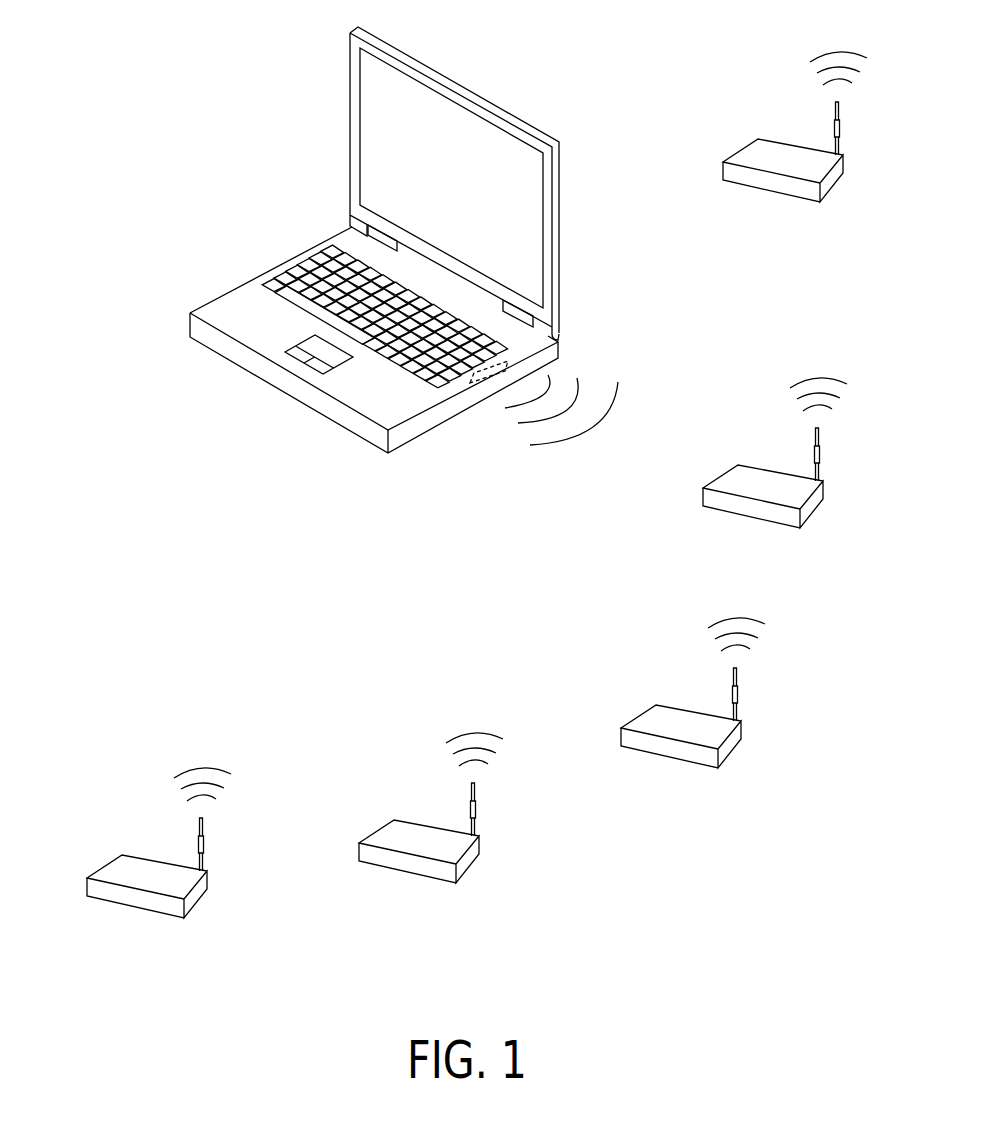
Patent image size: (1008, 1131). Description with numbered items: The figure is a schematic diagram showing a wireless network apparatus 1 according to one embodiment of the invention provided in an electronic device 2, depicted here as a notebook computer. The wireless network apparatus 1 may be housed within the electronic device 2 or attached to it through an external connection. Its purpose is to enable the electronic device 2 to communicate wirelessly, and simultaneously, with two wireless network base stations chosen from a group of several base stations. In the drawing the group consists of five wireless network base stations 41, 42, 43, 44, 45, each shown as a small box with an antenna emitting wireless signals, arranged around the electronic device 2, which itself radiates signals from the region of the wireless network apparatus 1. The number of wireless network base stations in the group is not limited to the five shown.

The wireless network apparatus 1 is at (490, 383).
The electronic device 2 is at (560, 197).
The wireless network base station 41 is at (142, 843).
The wireless network base station 42 is at (414, 808).
The wireless network base station 43 is at (676, 693).
The wireless network base station 44 is at (758, 453).
The wireless network base station 45 is at (778, 127).